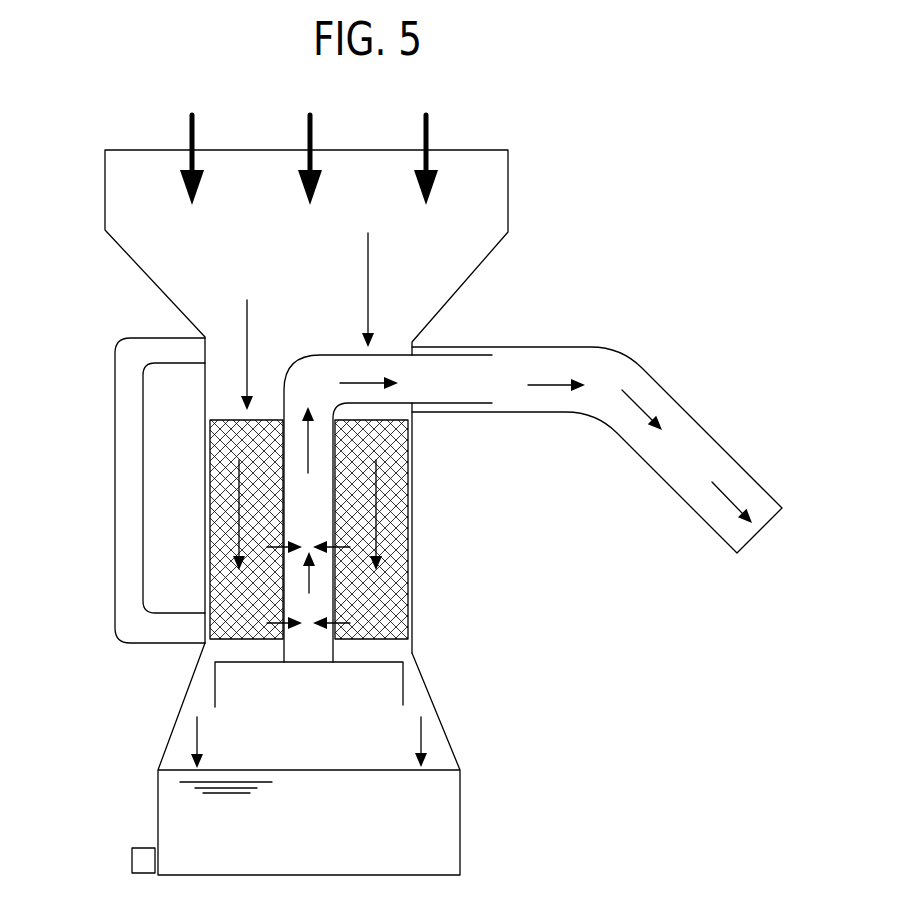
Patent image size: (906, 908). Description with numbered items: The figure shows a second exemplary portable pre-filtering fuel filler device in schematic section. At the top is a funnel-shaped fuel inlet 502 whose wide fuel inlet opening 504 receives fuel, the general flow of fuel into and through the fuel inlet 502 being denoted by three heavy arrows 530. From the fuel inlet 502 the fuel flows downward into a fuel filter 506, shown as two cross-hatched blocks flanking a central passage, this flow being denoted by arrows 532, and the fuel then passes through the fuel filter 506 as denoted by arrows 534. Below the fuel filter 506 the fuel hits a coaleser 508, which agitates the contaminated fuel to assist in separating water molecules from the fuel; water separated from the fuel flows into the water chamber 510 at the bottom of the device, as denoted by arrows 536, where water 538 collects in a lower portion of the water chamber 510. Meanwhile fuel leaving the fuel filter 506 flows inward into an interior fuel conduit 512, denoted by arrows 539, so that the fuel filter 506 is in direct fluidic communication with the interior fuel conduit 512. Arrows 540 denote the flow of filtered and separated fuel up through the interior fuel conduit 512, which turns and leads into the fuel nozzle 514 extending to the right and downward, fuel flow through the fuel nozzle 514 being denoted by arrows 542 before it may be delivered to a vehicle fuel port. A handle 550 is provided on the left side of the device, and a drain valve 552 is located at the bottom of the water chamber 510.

The fuel inlet 502 is at (98, 140).
The fuel inlet opening 504 is at (515, 140).
The fuel filter 506 is at (228, 500).
The coaleser 508 is at (245, 662).
The water chamber 510 is at (475, 693).
The interior fuel conduit 512 is at (326, 531).
The fuel nozzle 514 is at (792, 500).
The arrows denoting fuel flow into the fuel inlet 530 is at (190, 160).
The arrows denoting fuel flow from inlet to filter 532 is at (367, 267).
The arrows denoting fuel flow through the filter 534 is at (258, 480).
The arrows denoting water flow into the water chamber 536 is at (197, 736).
The water 538 is at (296, 833).
The arrows denoting fuel flow into the interior fuel conduit 539 is at (278, 546).
The arrows denoting fuel flow through the interior fuel conduit 540 is at (308, 453).
The arrows denoting fuel flow through the fuel nozzle 542 is at (372, 383).
The handle 550 is at (128, 474).
The drain valve 552 is at (132, 860).